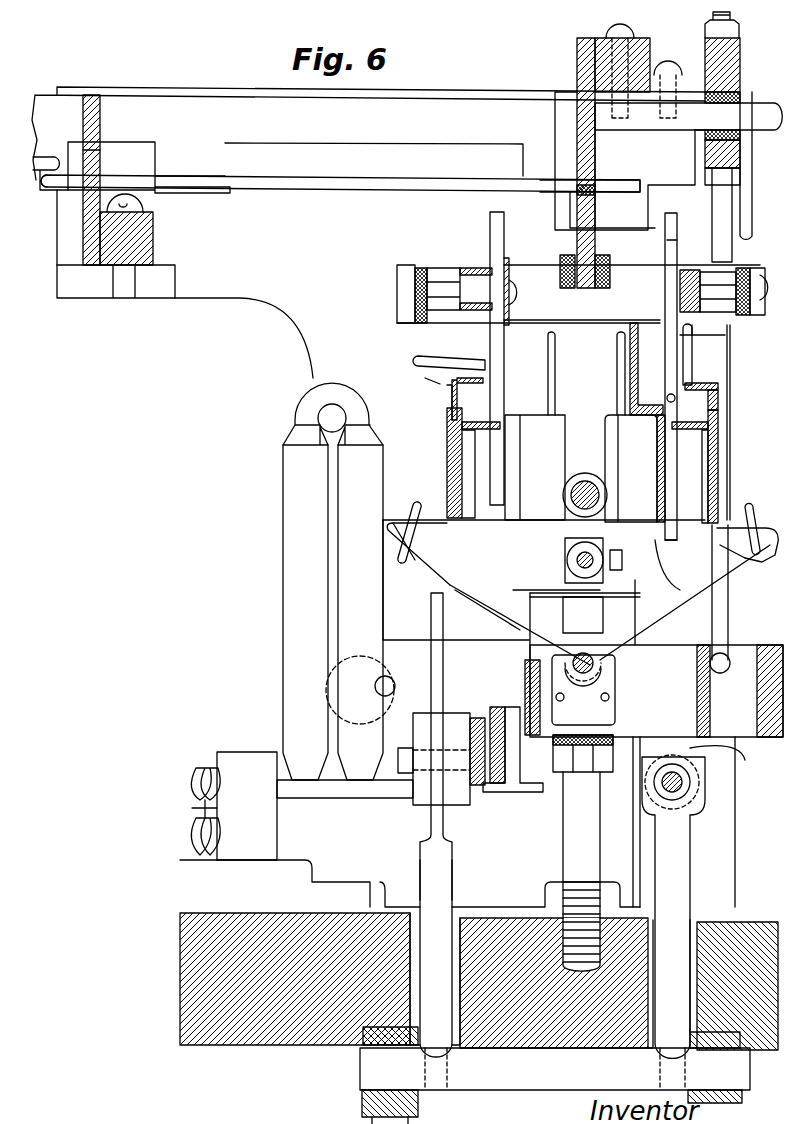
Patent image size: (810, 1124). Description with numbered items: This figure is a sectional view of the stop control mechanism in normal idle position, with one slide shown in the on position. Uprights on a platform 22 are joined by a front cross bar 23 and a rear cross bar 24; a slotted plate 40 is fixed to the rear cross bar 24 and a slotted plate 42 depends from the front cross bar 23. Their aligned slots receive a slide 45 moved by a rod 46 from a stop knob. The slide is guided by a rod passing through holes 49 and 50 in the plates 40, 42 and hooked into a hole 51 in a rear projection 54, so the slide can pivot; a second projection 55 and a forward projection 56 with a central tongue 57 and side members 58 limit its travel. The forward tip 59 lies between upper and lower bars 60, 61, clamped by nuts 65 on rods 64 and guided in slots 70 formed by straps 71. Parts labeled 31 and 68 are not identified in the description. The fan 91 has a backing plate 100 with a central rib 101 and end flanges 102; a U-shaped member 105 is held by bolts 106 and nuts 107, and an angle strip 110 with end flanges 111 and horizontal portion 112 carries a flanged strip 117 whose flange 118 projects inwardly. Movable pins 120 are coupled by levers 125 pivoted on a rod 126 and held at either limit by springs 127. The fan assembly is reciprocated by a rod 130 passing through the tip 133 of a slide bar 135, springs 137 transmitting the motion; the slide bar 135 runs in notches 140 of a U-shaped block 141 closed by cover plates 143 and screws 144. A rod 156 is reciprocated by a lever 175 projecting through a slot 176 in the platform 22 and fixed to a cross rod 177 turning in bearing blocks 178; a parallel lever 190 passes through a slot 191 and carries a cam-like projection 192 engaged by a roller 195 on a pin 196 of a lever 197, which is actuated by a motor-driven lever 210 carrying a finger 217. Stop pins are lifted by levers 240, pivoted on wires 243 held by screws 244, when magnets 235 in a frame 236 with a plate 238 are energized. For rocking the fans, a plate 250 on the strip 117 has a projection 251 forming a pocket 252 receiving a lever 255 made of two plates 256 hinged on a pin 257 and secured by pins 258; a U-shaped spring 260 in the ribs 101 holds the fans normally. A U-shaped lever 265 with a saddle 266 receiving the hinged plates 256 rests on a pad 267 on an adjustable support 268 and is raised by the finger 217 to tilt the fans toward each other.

The platform 22 is at (180, 972).
The front cross bar 23 is at (595, 56).
The rear cross bar 24 is at (110, 285).
The housing 31 is at (244, 319).
The plate 40 is at (88, 218).
The plate 42 is at (577, 72).
The slide 45 is at (368, 140).
The rod 46 is at (50, 160).
The hole 49 is at (96, 175).
The hole 50 is at (580, 192).
The hole 51 is at (48, 192).
The projection 54 is at (72, 158).
The second projection 55 is at (190, 161).
The third projection 56 is at (630, 161).
The central tongue 57 is at (609, 166).
The side members 58 is at (627, 188).
The forward tip 59 is at (763, 112).
The upper bar 60 is at (730, 63).
The lower bar 61 is at (725, 152).
The rods 64 is at (725, 222).
The nuts 65 is at (738, 28).
The bar end 68 is at (560, 178).
The guide slots 70 is at (750, 210).
The right angle straps 71 is at (740, 146).
The fan 91 is at (428, 391).
The backing plate 100 is at (508, 262).
The central rib 101 is at (630, 372).
The flange 102 is at (581, 468).
The U-shaped member 105 is at (436, 266).
The bolts 106 is at (474, 270).
The nuts 107 is at (420, 275).
The angle strip 110 is at (458, 520).
The flanges 111 is at (470, 512).
The horizontal portion 112 is at (462, 425).
The flanged strip 117 is at (450, 412).
The flange 118 is at (452, 400).
The movable pins 120 is at (492, 220).
The levers 125 is at (685, 218).
The rod 126 is at (583, 480).
The springs 127 is at (418, 361).
The rod 130 is at (540, 568).
The tip 133 is at (605, 560).
The operating slide bar 135 is at (622, 596).
The springs 137 is at (695, 352).
The notches 140 is at (700, 606).
The U-shaped block 141 is at (625, 650).
The cover plates 143 is at (540, 590).
The screws 144 is at (622, 565).
The rod 156 is at (690, 780).
The lever 175 is at (672, 862).
The slot 176 is at (736, 920).
The cross rod 177 is at (555, 1069).
The bearing blocks 178 is at (362, 1100).
The lever 190 is at (430, 880).
The slot 191 is at (395, 1040).
The cam-like projection 192 is at (431, 605).
The roller 195 is at (455, 800).
The pin 196 is at (400, 765).
The lever 197 is at (490, 712).
The lever 210 is at (478, 718).
The finger 217 is at (525, 790).
The magnets 235 is at (292, 548).
The frame 236 is at (217, 760).
The plate 238 is at (345, 789).
The levers 240 is at (198, 840).
The wires 243 is at (192, 808).
The screws 244 is at (196, 778).
The plate 250 is at (462, 448).
The right angular projection 251 is at (413, 505).
The pocket 252 is at (415, 560).
The lever 255 is at (500, 635).
The plates 256 is at (492, 610).
The pin 257 is at (600, 668).
The pins 258 is at (395, 515).
The U-shaped spring 260 is at (556, 372).
The U-shaped lever 265 is at (654, 691).
The saddle 266 is at (583, 690).
The pad 267 is at (575, 750).
The support 268 is at (575, 858).